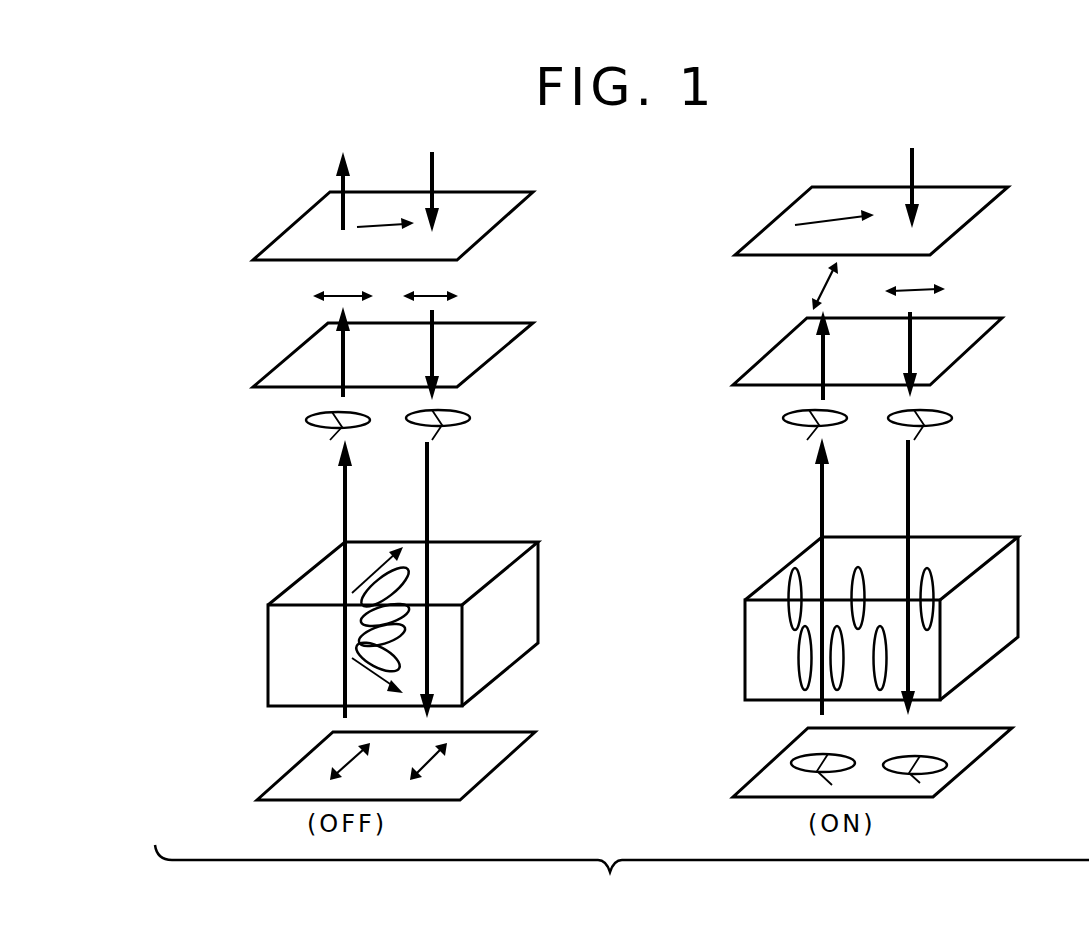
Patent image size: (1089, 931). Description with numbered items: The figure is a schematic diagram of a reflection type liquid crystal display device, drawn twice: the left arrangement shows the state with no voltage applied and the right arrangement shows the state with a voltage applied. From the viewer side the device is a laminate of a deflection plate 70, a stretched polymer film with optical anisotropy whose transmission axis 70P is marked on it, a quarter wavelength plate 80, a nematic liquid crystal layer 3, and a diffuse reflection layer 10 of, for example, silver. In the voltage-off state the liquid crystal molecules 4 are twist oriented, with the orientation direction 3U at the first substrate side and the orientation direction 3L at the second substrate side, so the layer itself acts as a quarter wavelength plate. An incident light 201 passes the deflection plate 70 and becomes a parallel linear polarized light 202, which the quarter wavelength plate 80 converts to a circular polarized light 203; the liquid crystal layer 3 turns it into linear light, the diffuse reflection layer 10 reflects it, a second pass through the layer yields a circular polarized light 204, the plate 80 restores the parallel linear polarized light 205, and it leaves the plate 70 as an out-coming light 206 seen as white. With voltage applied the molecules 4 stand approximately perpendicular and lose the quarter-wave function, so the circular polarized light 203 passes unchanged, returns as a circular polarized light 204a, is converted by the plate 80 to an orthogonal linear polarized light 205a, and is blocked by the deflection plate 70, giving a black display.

The nematic liquid crystal layer 3 is at (282, 642).
The orientation direction of liquid crystal molecules of the first substrate side 3U is at (368, 575).
The orientation direction of liquid crystal molecules of the second substrate side 3L is at (380, 672).
The liquid crystal molecules 4 is at (360, 652).
The diffuse reflection layer 10 is at (310, 762).
The deflection plate 70 is at (310, 222).
The transmission axis of the deflection plate 70P is at (387, 223).
The quarter wavelength plate 80 is at (290, 373).
The incident light 201 is at (433, 173).
The parallel linear polarized light 202 is at (435, 347).
The circular polarized light 203 is at (428, 502).
The circular polarized light 204 is at (343, 500).
The circular polarized light 204a is at (818, 505).
The parallel linear polarized light 205 is at (338, 353).
The orthogonal linear polarized light 205a is at (820, 353).
The out-coming light 206 is at (338, 213).